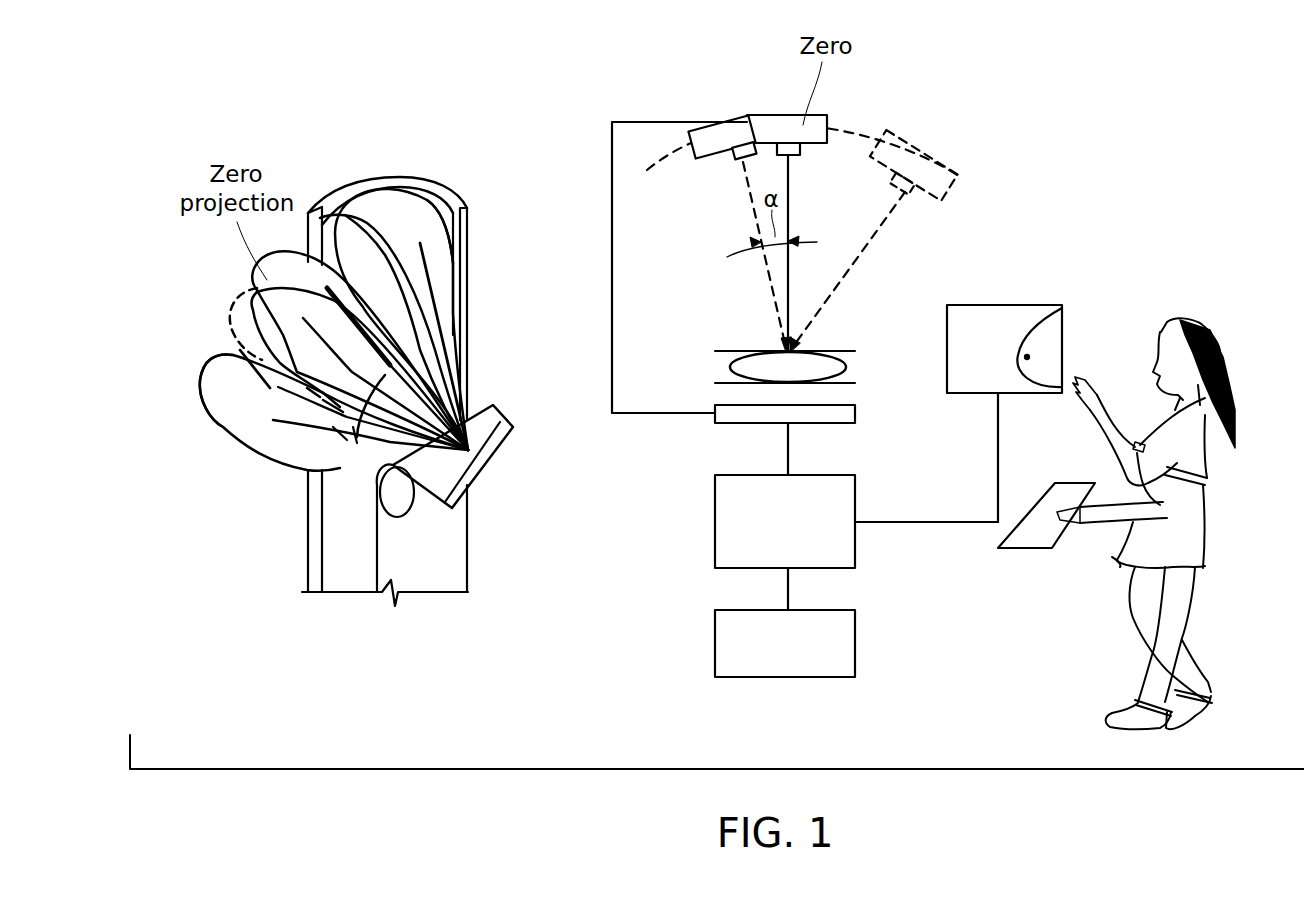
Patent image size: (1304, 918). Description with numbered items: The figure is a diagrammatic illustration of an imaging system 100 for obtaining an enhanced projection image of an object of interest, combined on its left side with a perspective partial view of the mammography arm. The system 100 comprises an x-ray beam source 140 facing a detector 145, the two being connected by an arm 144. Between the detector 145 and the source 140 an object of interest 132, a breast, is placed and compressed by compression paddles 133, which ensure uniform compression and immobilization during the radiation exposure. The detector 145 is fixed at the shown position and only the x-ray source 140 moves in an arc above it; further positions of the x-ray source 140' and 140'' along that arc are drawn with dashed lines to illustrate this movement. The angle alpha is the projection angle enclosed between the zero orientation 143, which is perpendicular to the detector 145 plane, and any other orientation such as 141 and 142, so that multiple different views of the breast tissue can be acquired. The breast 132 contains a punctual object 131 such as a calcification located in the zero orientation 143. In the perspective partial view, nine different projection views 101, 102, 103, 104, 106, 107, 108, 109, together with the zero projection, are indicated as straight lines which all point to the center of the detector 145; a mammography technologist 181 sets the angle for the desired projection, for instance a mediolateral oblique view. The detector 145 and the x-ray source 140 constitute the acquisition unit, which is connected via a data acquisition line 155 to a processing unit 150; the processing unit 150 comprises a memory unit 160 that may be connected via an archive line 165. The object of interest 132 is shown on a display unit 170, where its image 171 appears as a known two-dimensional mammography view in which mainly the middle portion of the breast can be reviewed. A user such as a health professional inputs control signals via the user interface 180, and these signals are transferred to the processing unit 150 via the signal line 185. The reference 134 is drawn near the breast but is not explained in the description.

The system 100 is at (1062, 95).
The projection view 101 is at (296, 422).
The projection view 102 is at (253, 373).
The projection view 103 is at (273, 357).
The projection view 104 is at (257, 292).
The projection view 106 is at (345, 215).
The projection view 107 is at (397, 260).
The projection view 108 is at (420, 243).
The projection view 109 is at (440, 283).
The punctual object 131 is at (1024, 355).
The object of interest 132 is at (833, 367).
The compression paddles 133 is at (723, 350).
The breast center 134 is at (773, 370).
The x-ray beam source 140 is at (545, 244).
The position of the x-ray source 140' is at (699, 178).
The position of the x-ray source 140'' is at (466, 270).
The orientation 141 is at (750, 212).
The orientation 142 is at (860, 265).
The zero orientation 143 is at (788, 180).
The arm 144 is at (623, 417).
The detector 145 is at (443, 507).
The processing unit 150 is at (715, 518).
The data acquisition line 155 is at (788, 447).
The memory unit 160 is at (715, 642).
The archive line 165 is at (788, 587).
The display unit 170 is at (973, 385).
The displayed image 171 is at (987, 315).
The user interface 180 is at (1035, 538).
The mammography technologist 181 is at (1198, 537).
The signal line 185 is at (968, 525).